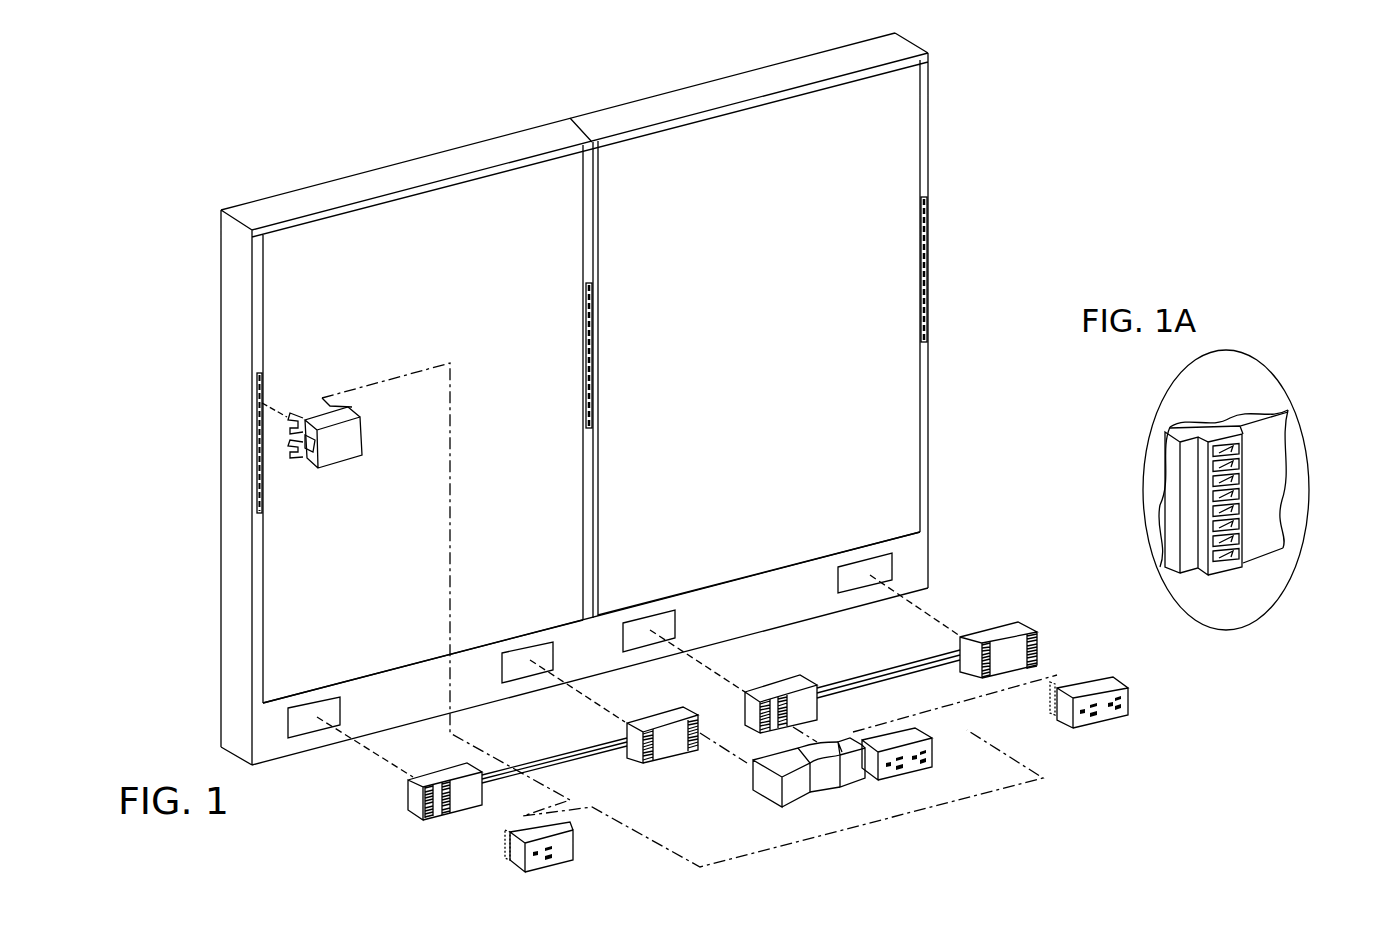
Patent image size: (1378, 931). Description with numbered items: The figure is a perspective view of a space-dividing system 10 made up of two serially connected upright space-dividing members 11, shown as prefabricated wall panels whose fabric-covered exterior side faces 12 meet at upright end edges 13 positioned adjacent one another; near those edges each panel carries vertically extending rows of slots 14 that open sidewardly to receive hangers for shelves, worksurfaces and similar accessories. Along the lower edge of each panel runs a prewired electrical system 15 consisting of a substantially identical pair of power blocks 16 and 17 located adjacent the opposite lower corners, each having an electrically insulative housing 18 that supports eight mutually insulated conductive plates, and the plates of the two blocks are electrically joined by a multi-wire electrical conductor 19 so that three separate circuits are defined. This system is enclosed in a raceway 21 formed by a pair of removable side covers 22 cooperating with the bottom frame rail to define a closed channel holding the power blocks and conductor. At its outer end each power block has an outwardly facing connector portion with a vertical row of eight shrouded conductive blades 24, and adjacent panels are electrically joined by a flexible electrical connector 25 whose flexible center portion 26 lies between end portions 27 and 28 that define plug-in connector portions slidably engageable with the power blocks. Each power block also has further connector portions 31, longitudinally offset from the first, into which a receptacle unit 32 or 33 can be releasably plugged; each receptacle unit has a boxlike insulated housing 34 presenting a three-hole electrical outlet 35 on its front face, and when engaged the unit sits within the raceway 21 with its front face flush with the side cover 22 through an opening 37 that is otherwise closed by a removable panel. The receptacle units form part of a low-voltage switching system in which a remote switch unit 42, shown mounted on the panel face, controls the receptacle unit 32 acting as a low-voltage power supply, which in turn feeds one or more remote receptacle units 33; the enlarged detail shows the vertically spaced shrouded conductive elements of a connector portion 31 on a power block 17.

In FIG. 1, the space-dividing system 10 is at (324, 122).
In FIG. 1, the upright space-dividing member 11 is at (250, 205).
In FIG. 1, the exterior side face 12 is at (590, 437).
In FIG. 1, the upright end edge 13 is at (228, 330).
In FIG. 1, the slots 14 is at (258, 487).
In FIG. 1, the prewired electrical system 15 is at (927, 650).
In FIG. 1, the power block 16 is at (450, 775).
In FIG. 1, the power block 17 is at (690, 677).
In FIG. 1A, the power block 17 is at (1250, 413).
In FIG. 1, the housing 18 is at (472, 792).
In FIG. 1, the multi-wire electrical conductor 19 is at (879, 668).
In FIG. 1, the raceway 21 is at (343, 682).
In FIG. 1, the side cover 22 is at (399, 690).
In FIG. 1, the conductive blades 24 is at (430, 820).
In FIG. 1, the flexible electrical connector 25 is at (818, 792).
In FIG. 1, the flexible center portion 26 is at (828, 780).
In FIG. 1, the end portion 27 is at (790, 795).
In FIG. 1, the end portion 28 is at (858, 780).
In FIG. 1A, the electrical connector portion 31 is at (1246, 470).
In FIG. 1, the receptacle unit 32 is at (569, 866).
In FIG. 1, the receptacle unit 33 is at (916, 782).
In FIG. 1, the insulated housing 34 is at (938, 730).
In FIG. 1, the electrical outlet 35 is at (916, 768).
In FIG. 1, the opening 37 is at (640, 625).
In FIG. 1, the remote switch unit 42 is at (335, 473).